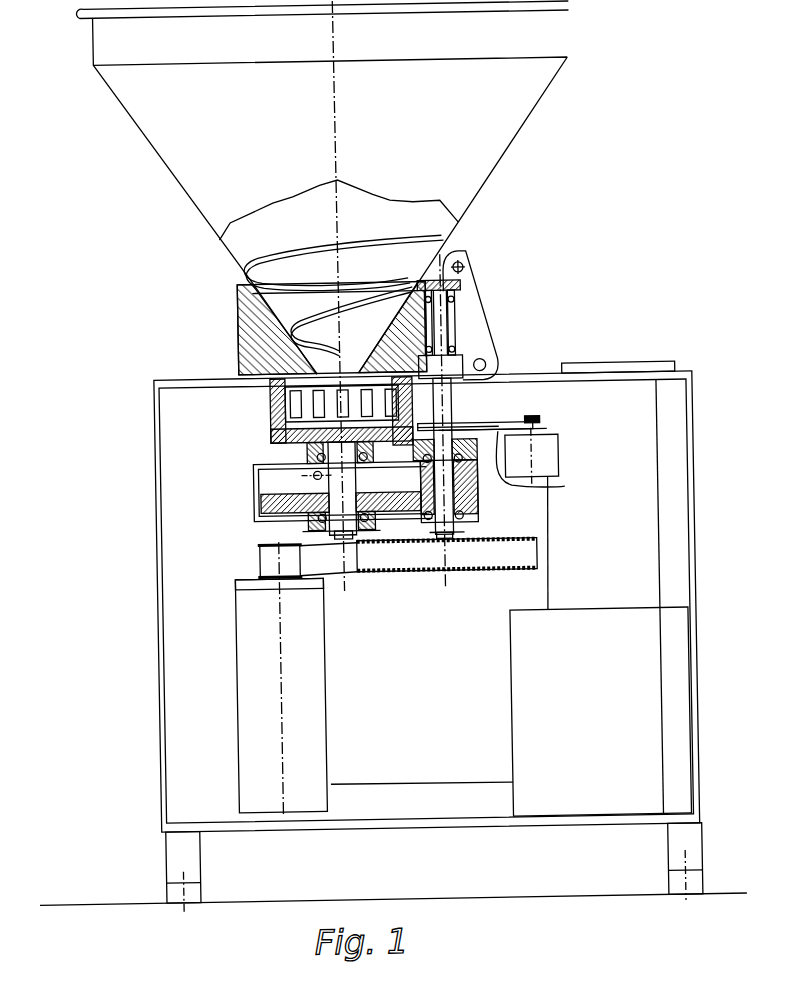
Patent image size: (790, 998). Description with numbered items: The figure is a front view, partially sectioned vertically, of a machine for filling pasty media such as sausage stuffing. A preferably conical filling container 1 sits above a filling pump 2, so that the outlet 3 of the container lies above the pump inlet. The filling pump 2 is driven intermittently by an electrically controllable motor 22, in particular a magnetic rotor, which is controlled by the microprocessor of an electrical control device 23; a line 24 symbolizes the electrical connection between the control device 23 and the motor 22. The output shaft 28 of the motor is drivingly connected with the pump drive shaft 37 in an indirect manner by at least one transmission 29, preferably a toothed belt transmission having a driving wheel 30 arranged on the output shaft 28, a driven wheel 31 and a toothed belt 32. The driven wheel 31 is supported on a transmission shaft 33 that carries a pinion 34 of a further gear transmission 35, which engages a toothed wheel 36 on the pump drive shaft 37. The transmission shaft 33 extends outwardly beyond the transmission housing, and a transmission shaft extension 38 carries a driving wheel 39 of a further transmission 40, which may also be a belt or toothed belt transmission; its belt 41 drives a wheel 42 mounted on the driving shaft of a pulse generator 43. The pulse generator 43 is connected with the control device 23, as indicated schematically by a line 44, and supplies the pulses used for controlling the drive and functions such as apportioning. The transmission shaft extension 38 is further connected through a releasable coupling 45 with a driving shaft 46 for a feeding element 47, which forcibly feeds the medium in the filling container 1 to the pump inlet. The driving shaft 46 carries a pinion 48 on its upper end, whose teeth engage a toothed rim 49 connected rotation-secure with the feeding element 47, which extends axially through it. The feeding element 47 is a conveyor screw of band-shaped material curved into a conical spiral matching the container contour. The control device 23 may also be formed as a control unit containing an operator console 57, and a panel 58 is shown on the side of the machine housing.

The filling container 1 is at (498, 147).
The filling pump 2 is at (271, 401).
The outlet 3 is at (323, 359).
The motor 22 is at (306, 688).
The electrical control device 23 is at (518, 670).
The line 24 is at (441, 783).
The output shaft 28 is at (240, 578).
The transmission 29 is at (400, 578).
The driving wheel 30 is at (262, 543).
The driven wheel 31 is at (508, 568).
The toothed belt 32 is at (423, 552).
The transmission shaft 33 is at (451, 482).
The pinion 34 is at (463, 505).
The transmission 35 is at (254, 457).
The toothed wheel 36 is at (266, 492).
The pump drive shaft 37 is at (352, 570).
The transmission shaft extension 38 is at (449, 401).
The driving wheel 39 is at (466, 425).
The further transmission 40 is at (545, 418).
The belt 41 is at (565, 489).
The wheel 42 is at (503, 431).
The pulse generator 43 is at (548, 456).
The line 44 is at (552, 584).
The releasable coupling 45 is at (464, 365).
The driving shaft 46 is at (446, 321).
The feeding element 47 is at (306, 247).
The pinion 48 is at (466, 276).
The toothed rim 49 is at (304, 292).
The operator console 57 is at (616, 366).
The panel 58 is at (657, 496).